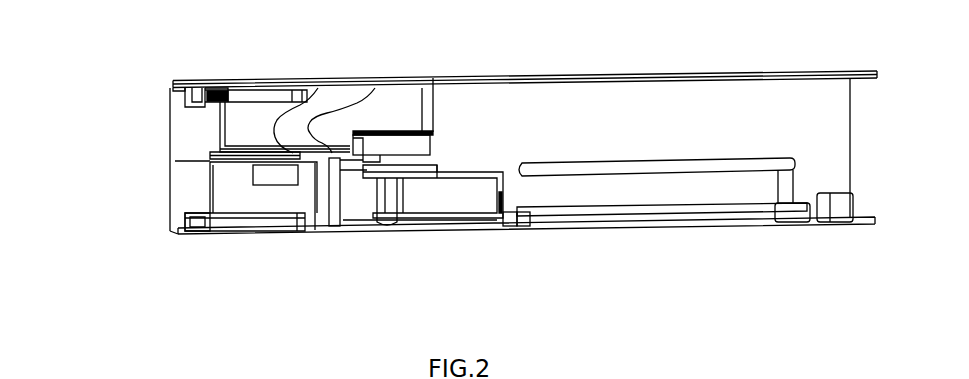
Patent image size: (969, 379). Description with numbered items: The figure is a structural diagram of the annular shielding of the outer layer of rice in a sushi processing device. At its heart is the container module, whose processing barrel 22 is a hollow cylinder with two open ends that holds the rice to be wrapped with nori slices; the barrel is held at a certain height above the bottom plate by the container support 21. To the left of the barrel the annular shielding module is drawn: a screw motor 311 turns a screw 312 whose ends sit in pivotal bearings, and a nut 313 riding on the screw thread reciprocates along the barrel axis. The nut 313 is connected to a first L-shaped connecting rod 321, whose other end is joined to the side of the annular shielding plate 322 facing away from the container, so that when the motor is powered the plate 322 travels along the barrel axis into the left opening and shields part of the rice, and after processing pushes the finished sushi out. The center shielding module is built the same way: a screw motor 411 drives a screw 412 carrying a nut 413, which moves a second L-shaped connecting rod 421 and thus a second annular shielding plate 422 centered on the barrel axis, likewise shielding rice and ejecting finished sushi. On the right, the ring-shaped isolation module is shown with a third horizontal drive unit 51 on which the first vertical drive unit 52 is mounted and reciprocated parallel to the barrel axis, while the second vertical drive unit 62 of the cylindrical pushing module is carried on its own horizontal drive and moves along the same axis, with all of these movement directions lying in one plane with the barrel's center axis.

The container support 21 is at (333, 215).
The processing barrel 22 is at (375, 87).
The screw motor 311 is at (172, 92).
The screw 312 is at (244, 83).
The nut 313 is at (186, 83).
The first L-shaped connecting rod 321 is at (220, 138).
The annular shielding plate 322 is at (318, 82).
The screw motor 411 is at (185, 232).
The screw 412 is at (263, 214).
The nut 413 is at (208, 231).
The second L-shaped connecting rod 421 is at (207, 183).
The annular shielding plate 422 is at (210, 164).
The third horizontal drive unit 51 is at (457, 215).
The first vertical drive unit 52 is at (392, 222).
The second vertical drive unit 62 is at (505, 213).